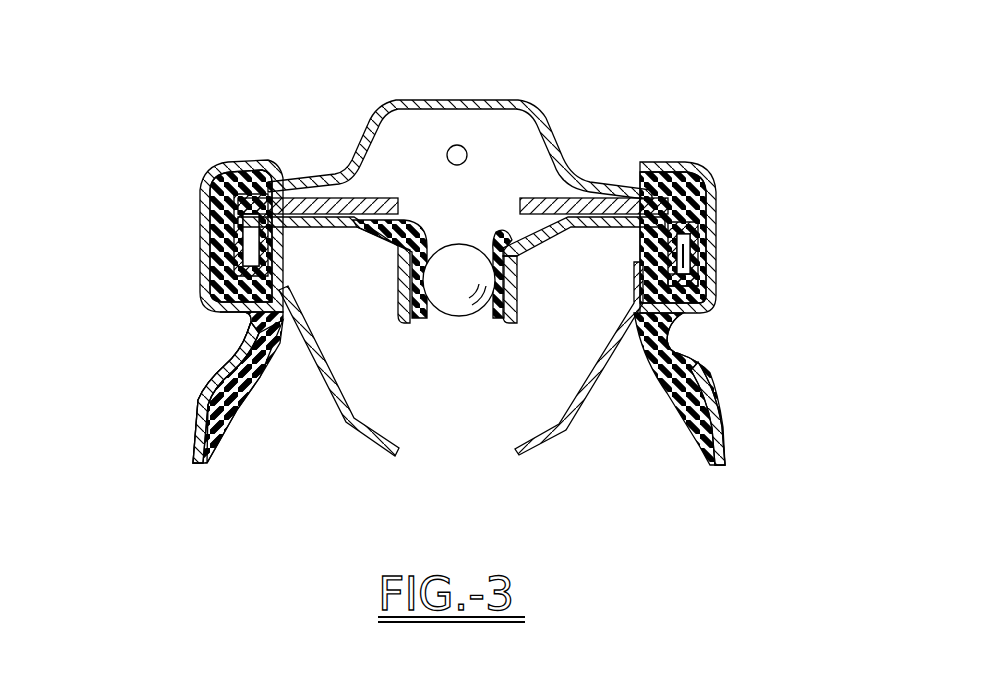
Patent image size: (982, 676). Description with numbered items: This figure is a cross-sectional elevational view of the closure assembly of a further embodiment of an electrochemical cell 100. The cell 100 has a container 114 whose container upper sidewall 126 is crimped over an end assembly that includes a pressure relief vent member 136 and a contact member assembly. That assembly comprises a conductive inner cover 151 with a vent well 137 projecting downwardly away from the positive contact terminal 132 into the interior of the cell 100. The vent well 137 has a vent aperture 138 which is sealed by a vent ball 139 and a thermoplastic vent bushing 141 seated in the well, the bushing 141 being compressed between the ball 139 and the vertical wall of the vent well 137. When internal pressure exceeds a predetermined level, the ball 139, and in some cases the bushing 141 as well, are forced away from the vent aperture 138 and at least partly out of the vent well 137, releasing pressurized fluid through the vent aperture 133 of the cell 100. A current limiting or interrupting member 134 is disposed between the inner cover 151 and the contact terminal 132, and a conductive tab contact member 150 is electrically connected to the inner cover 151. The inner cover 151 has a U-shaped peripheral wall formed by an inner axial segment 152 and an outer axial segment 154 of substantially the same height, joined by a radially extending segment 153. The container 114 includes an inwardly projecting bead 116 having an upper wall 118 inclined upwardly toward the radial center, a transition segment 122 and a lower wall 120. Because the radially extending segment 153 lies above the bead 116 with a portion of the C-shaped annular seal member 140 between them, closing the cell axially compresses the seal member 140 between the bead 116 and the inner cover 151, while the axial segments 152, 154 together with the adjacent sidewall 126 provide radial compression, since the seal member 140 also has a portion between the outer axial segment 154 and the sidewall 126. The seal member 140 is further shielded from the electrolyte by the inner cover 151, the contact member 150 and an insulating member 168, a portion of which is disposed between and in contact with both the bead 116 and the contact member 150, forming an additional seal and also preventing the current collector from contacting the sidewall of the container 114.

The electrochemical cell 100 is at (308, 112).
The container 114 is at (183, 410).
The bead 116 is at (712, 336).
The upper wall 118 is at (688, 323).
The lower wall 120 is at (697, 352).
The transition segment 122 is at (250, 318).
The container upper sidewall 126 is at (216, 183).
The positive contact terminal 132 is at (520, 100).
The vent aperture 133 is at (448, 150).
The current limiting or interrupting member 134 is at (558, 205).
The pressure relief vent member 136 is at (390, 311).
The vent well 137 is at (443, 228).
The vent aperture 138 is at (493, 320).
The vent ball 139 is at (461, 317).
The seal member 140 is at (220, 234).
The vent bushing 141 is at (505, 232).
The conductive tab contact member 150 is at (570, 400).
The conductive inner cover 151 is at (561, 247).
The inner axial segment 152 is at (673, 258).
The radially extending segment 153 is at (690, 290).
The outer axial segment 154 is at (690, 243).
The insulating member 168 is at (237, 417).